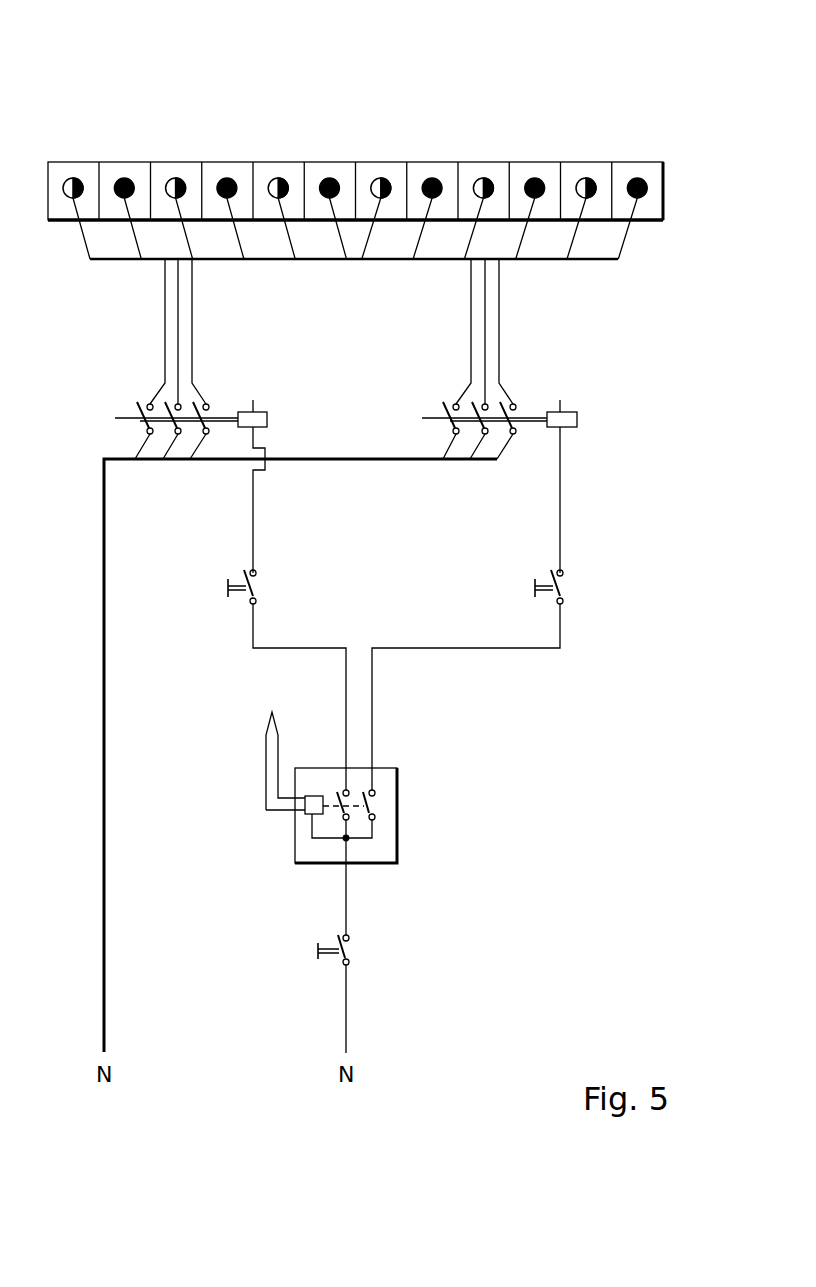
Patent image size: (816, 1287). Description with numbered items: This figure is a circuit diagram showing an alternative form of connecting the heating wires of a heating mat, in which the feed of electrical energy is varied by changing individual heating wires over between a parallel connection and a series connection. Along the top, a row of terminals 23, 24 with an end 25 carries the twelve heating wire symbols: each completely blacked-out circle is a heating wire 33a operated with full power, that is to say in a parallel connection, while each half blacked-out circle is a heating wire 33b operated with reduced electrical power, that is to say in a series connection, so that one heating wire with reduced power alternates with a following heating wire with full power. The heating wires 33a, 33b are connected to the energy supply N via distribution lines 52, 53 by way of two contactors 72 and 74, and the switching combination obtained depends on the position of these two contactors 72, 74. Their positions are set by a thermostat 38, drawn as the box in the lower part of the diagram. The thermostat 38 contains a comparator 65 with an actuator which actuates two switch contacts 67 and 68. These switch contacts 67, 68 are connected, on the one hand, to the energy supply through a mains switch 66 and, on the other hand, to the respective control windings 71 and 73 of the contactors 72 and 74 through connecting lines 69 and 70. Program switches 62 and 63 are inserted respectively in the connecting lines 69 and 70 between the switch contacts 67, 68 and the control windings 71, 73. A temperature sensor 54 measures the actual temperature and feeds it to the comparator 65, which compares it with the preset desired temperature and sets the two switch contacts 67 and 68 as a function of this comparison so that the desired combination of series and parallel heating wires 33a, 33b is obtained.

The terminal strip 23 is at (355, 144).
The terminal strip 24 is at (353, 157).
The terminal strip end 25 is at (653, 224).
The heating wire operated with full power 33a is at (124, 178).
The heating wire operated with reduced power 33b is at (73, 178).
The distribution line 52 is at (355, 258).
The distribution line 53 is at (313, 261).
The temperature sensor 54 is at (262, 736).
The program switch 62 is at (256, 587).
The program switch 63 is at (548, 586).
The comparator 65 is at (312, 796).
The mains switch 66 is at (348, 950).
The switch contact 67 is at (340, 810).
The switch contact 68 is at (371, 804).
The connecting line 69 is at (315, 645).
The connecting line 70 is at (487, 645).
The control winding 71 is at (259, 420).
The contactor 72 is at (136, 414).
The control winding 73 is at (567, 418).
The contactor 74 is at (440, 414).
The thermostat 38 is at (384, 863).